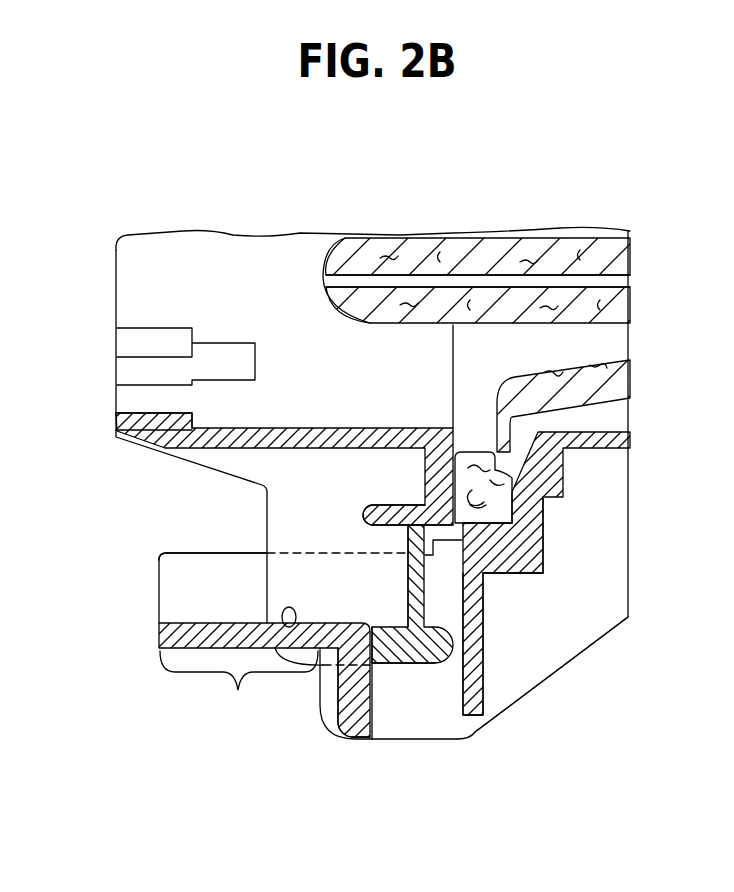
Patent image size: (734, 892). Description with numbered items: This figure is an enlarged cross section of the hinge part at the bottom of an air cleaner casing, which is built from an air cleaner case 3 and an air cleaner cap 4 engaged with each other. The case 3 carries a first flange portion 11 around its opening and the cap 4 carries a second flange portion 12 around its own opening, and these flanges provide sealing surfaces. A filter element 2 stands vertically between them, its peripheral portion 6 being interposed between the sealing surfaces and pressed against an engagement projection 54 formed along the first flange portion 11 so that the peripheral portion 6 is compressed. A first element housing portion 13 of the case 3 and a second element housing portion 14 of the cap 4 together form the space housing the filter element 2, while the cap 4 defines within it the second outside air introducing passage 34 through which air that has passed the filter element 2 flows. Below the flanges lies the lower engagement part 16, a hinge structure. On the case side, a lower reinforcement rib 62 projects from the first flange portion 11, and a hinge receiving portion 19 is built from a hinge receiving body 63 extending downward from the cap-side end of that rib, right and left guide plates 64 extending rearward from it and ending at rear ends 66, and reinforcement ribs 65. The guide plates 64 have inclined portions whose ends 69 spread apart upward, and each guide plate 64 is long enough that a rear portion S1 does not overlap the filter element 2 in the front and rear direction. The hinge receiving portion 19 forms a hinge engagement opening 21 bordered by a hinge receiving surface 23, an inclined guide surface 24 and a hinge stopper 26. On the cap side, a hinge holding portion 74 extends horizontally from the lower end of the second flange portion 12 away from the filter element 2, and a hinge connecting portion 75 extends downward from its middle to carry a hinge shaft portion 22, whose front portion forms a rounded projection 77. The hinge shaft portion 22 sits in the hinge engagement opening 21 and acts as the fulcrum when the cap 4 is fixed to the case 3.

The filter element 2 is at (591, 247).
The air cleaner case 3 is at (630, 436).
The air cleaner cap 4 is at (130, 420).
The peripheral portion 6 is at (493, 577).
The first flange portion 11 is at (543, 523).
The second flange portion 12 is at (425, 470).
The first element housing portion 13 is at (493, 332).
The second element housing portion 14 is at (413, 340).
The lower engagement part 16 is at (528, 711).
The hinge receiving portion 19 is at (330, 743).
The hinge engagement opening 21 is at (454, 685).
The hinge shaft portion 22 is at (397, 650).
The hinge receiving surface 23 is at (287, 628).
The inclined guide surface 24 is at (229, 607).
The hinge stopper 26 is at (433, 663).
The second outside air introducing passage 34 is at (213, 258).
The engagement projection 54 is at (467, 455).
The lower reinforcement rib 62 is at (543, 570).
The hinge receiving body 63 is at (340, 702).
The guide plate 64 is at (162, 553).
The reinforcement rib 65 is at (592, 644).
The rear end 66 is at (160, 636).
The end 69 is at (207, 553).
The hinge holding portion 74 is at (368, 510).
The hinge connecting portion 75 is at (408, 583).
The projection 77 is at (487, 673).
The rear portion S1 is at (238, 690).